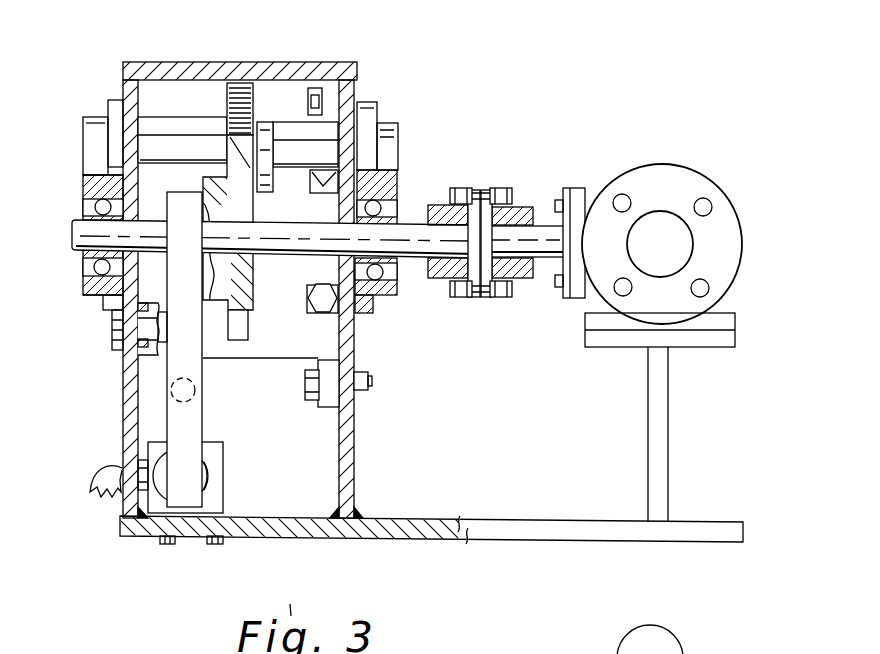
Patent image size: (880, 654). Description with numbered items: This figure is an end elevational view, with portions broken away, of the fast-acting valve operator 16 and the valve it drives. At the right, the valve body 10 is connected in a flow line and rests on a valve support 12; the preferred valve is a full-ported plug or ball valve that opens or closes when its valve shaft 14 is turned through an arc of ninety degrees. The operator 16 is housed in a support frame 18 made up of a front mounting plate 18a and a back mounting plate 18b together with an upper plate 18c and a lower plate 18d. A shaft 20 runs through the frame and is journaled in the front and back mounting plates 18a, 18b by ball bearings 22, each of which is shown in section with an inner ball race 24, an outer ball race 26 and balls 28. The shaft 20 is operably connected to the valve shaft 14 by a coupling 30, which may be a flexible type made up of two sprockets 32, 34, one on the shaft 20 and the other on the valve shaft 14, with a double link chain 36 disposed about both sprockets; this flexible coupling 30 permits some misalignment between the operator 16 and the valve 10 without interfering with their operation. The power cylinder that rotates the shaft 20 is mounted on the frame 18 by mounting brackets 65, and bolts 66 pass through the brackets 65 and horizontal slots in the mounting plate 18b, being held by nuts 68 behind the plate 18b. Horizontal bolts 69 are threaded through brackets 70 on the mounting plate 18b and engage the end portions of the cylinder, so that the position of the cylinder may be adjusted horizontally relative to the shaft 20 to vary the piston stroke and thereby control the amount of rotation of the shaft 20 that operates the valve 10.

The valve body 10 is at (748, 206).
The valve support 12 is at (668, 432).
The valve shaft 14 is at (545, 222).
The valve operator 16 is at (116, 61).
The support frame 18 is at (360, 470).
The front mounting plate 18a is at (124, 405).
The back mounting plate 18b is at (343, 427).
The upper plate 18c is at (288, 62).
The lower plate 18d is at (293, 528).
The shaft 20 is at (406, 222).
The ball bearings 22 is at (78, 321).
The inner ball race 24 is at (82, 258).
The outer ball race 26 is at (83, 287).
The balls 28 is at (82, 268).
The coupling 30 is at (485, 311).
The sprocket 32 is at (441, 282).
The sprocket 34 is at (518, 282).
The double link chain 36 is at (462, 188).
The mounting brackets 65 is at (328, 408).
The bolts 66 is at (307, 398).
The nuts 68 is at (357, 367).
The horizontal bolts 69 is at (322, 174).
The brackets 70 is at (325, 192).